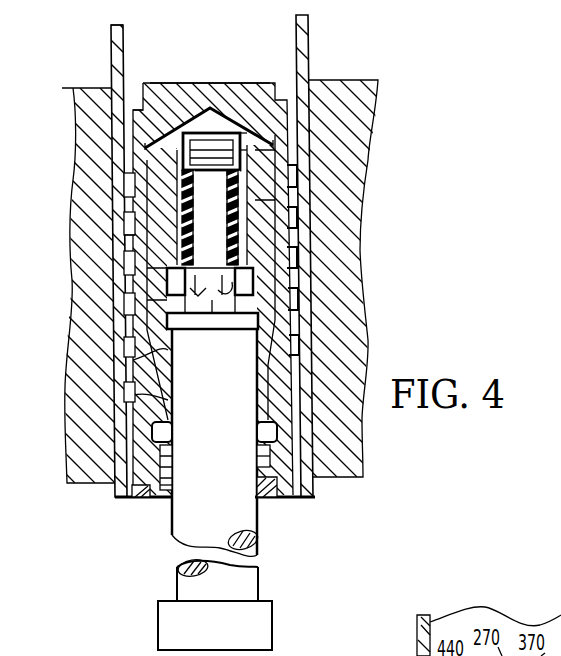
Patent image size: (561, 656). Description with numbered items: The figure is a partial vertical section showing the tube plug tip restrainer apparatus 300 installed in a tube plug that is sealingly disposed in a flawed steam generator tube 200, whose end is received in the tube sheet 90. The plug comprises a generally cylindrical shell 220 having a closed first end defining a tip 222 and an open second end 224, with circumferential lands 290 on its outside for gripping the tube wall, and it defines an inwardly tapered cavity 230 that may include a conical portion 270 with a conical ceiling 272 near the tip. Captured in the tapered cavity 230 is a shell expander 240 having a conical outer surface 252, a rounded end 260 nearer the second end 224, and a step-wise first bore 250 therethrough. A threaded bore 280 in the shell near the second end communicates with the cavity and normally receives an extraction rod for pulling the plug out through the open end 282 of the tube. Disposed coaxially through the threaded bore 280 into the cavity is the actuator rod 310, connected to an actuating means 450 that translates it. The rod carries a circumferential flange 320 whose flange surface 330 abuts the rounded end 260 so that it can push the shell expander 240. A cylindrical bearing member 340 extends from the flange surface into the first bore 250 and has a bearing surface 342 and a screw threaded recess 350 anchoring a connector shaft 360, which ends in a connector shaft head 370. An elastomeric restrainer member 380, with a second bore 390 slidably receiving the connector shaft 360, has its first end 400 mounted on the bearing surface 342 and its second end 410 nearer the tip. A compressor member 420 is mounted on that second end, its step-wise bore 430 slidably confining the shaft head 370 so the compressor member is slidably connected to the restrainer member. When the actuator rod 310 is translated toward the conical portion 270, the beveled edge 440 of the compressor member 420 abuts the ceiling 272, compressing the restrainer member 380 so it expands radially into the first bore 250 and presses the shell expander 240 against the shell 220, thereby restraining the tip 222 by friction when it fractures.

The tube sheet 90 is at (330, 84).
The steam generator tube 200 is at (303, 46).
The beveled edge 440 is at (112, 80).
The shell 220 is at (150, 400).
The tip 222 is at (214, 92).
The conical portion 270 is at (198, 114).
The conical ceiling 272 is at (226, 126).
The compressor member 420 is at (183, 141).
The step-wise bore 430 is at (232, 134).
The connector shaft head 370 is at (250, 152).
The second end 410 is at (270, 178).
The restrainer member 380 is at (240, 202).
The second bore 390 is at (181, 258).
The bearing member 340 is at (208, 335).
The bearing surface 342 is at (168, 285).
The flange surface 330 is at (259, 320).
The circumferential flange 320 is at (212, 308).
The tube plug tip restrainer apparatus 300 is at (281, 529).
The actuator rod 310 is at (177, 581).
The actuating means 450 is at (158, 602).
The tapered cavity 230 is at (156, 348).
The shell expander 240 is at (160, 314).
The second end 224 is at (150, 453).
The open end 282 is at (140, 503).
The threaded bore 280 is at (272, 499).
The lands 290 is at (128, 205).
The conical outer surface 252 is at (130, 226).
The first bore 250 is at (136, 167).
The connector shaft 360 is at (287, 219).
The first end 400 is at (290, 272).
The screw threaded recess 350 is at (266, 273).
The rounded end 260 is at (295, 289).